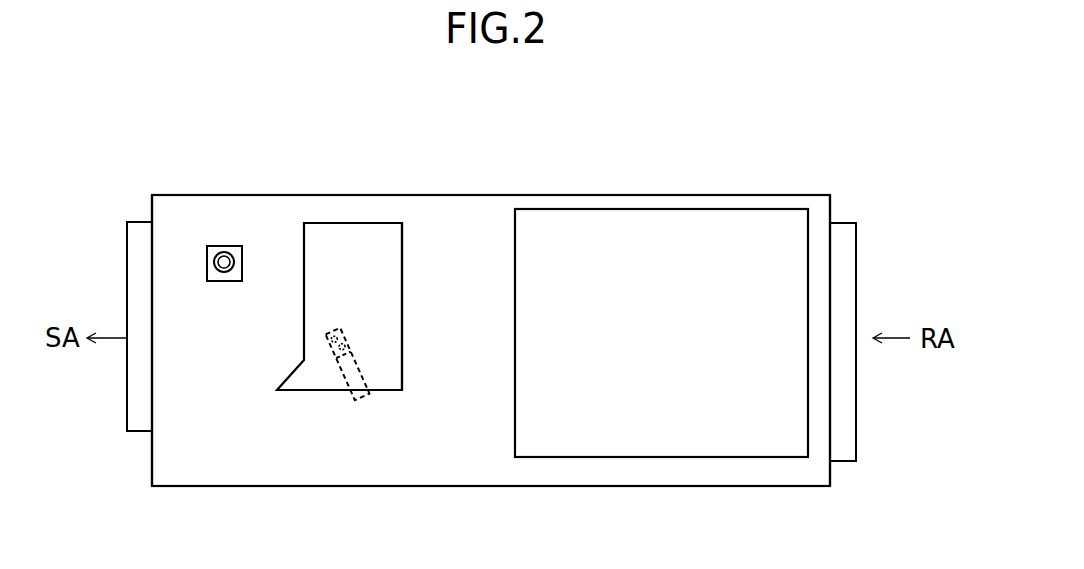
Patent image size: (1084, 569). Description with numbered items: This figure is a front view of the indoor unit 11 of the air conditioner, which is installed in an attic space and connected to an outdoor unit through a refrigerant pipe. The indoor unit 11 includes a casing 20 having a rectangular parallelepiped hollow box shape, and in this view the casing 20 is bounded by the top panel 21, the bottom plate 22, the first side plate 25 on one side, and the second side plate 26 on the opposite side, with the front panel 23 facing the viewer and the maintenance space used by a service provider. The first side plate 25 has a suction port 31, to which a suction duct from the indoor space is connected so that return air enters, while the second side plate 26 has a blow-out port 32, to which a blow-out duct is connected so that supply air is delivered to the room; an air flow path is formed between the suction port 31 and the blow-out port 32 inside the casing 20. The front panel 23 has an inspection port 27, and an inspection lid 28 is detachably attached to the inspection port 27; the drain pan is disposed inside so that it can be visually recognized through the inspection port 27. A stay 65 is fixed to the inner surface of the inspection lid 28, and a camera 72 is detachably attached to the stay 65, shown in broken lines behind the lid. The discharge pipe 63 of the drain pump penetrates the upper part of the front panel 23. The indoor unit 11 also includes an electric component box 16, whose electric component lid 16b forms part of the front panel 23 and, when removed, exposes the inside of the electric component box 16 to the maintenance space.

The indoor unit 11 is at (491, 285).
The electric component box 16 is at (641, 459).
The electric component lid 16b is at (725, 445).
The casing 20 is at (470, 193).
The top panel 21 is at (359, 193).
The bottom plate 22 is at (466, 489).
The front panel 23 is at (318, 470).
The first side plate 25 is at (831, 205).
The second side plate 26 is at (152, 461).
The inspection port 27 is at (392, 262).
The inspection lid 28 is at (388, 316).
The suction port 31 is at (857, 268).
The blow-out port 32 is at (128, 258).
The discharge pipe 63 is at (224, 283).
The stay 65 is at (325, 343).
The camera 72 is at (363, 393).